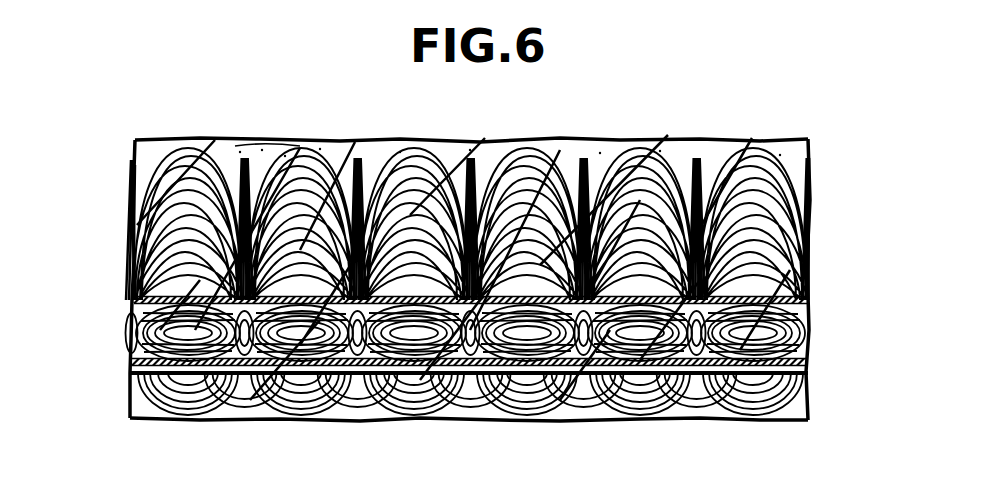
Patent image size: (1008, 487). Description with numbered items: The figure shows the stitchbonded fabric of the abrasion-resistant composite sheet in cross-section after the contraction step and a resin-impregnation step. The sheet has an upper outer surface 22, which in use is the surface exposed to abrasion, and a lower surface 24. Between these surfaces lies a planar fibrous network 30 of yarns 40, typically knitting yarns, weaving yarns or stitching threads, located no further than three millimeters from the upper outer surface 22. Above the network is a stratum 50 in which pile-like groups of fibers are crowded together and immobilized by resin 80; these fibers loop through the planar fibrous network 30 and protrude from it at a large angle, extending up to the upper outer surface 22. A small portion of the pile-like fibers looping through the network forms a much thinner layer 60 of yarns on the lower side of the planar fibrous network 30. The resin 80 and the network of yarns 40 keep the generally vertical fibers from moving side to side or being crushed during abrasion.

The upper outer surface 22 is at (674, 138).
The lower surface 24 is at (694, 418).
The planar fibrous network 30 is at (841, 296).
The yarns 40 is at (128, 374).
The stratum 50 is at (841, 137).
The thinner layer of yarns 60 is at (841, 375).
The resin 80 is at (250, 143).